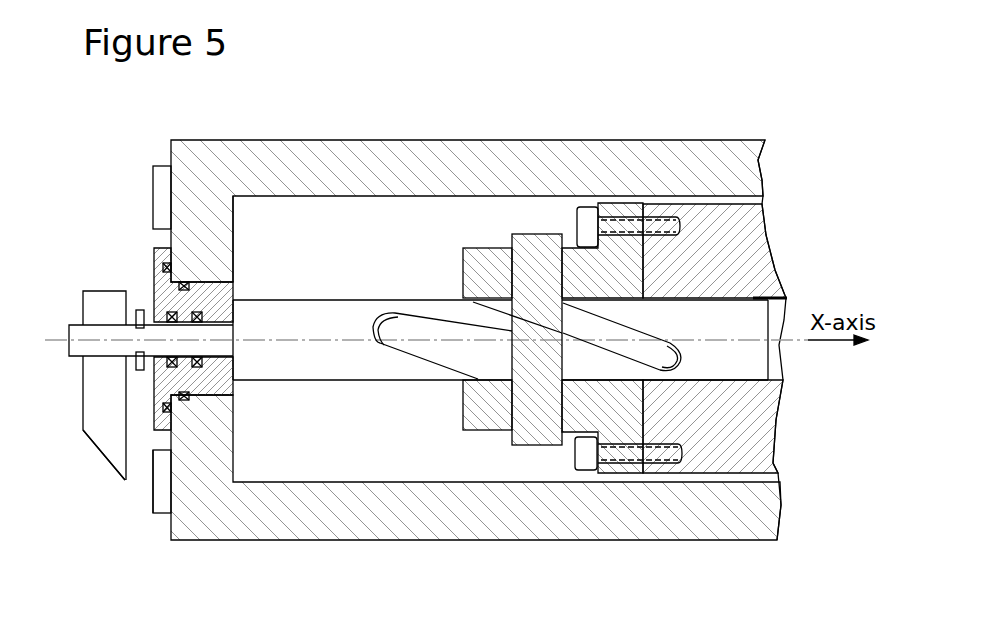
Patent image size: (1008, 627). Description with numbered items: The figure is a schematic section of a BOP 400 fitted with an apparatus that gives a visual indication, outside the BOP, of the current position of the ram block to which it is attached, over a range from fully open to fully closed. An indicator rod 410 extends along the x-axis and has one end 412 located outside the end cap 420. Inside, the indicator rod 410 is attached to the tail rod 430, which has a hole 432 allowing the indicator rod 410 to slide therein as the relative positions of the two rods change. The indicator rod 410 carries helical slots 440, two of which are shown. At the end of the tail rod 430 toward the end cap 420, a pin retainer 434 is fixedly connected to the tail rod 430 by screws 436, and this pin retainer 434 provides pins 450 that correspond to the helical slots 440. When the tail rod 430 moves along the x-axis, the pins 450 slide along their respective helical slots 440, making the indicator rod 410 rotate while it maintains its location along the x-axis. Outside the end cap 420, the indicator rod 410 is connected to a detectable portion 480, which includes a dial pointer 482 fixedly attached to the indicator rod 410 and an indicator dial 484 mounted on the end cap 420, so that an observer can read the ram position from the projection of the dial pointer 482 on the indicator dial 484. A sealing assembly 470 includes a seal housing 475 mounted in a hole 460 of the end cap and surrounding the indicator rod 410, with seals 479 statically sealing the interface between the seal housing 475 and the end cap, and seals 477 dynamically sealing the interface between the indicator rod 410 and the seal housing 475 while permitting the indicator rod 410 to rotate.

The BOP 400 is at (731, 96).
The indicator rod 410 is at (748, 322).
The end 412 is at (76, 348).
The end cap 420 is at (181, 160).
The tail rod 430 is at (733, 238).
The hole 432 is at (816, 273).
The pin retainer 434 is at (483, 418).
The screws 436 is at (620, 227).
The helical slots 440 is at (587, 323).
The pins 450 is at (527, 248).
The hole 460 is at (215, 392).
The sealing assembly 470 is at (208, 290).
The seal housing 475 is at (156, 296).
The seals 477 is at (194, 366).
The seals 479 is at (183, 282).
The detectable portion 480 is at (153, 190).
The dial pointer 482 is at (93, 430).
The indicator dial 484 is at (146, 500).